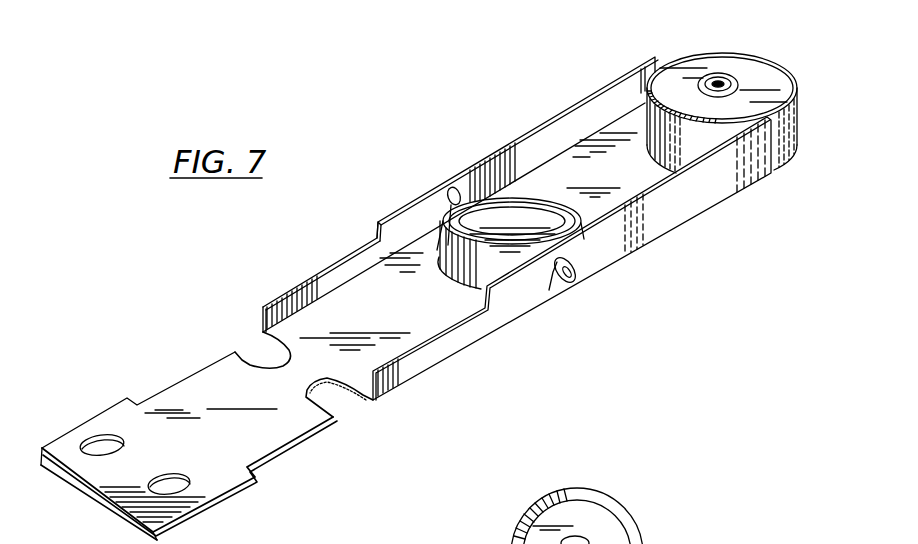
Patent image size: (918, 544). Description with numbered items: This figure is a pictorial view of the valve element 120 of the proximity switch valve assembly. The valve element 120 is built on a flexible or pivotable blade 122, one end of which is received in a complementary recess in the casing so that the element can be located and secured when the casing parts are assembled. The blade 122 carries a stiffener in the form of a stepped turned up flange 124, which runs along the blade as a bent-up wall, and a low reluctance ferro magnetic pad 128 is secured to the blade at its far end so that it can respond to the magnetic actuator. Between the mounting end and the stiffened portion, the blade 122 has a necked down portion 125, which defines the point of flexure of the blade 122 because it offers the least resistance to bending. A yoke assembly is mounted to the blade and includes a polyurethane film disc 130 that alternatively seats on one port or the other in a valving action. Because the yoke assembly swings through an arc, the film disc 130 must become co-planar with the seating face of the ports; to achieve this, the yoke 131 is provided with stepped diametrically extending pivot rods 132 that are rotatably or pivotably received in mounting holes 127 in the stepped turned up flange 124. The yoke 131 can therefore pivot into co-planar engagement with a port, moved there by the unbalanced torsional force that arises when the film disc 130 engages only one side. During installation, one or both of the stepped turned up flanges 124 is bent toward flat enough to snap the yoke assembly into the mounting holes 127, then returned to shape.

The valve element 120 is at (630, 330).
The blade 122 is at (213, 377).
The stepped turned up flange 124 is at (317, 279).
The necked down portion 125 is at (337, 419).
The mounting holes 127 is at (462, 190).
The low reluctance ferro magnetic pad 128 is at (713, 60).
The film disc 130 is at (377, 232).
The yoke 131 is at (545, 195).
The stepped pivot rods 132 is at (452, 197).